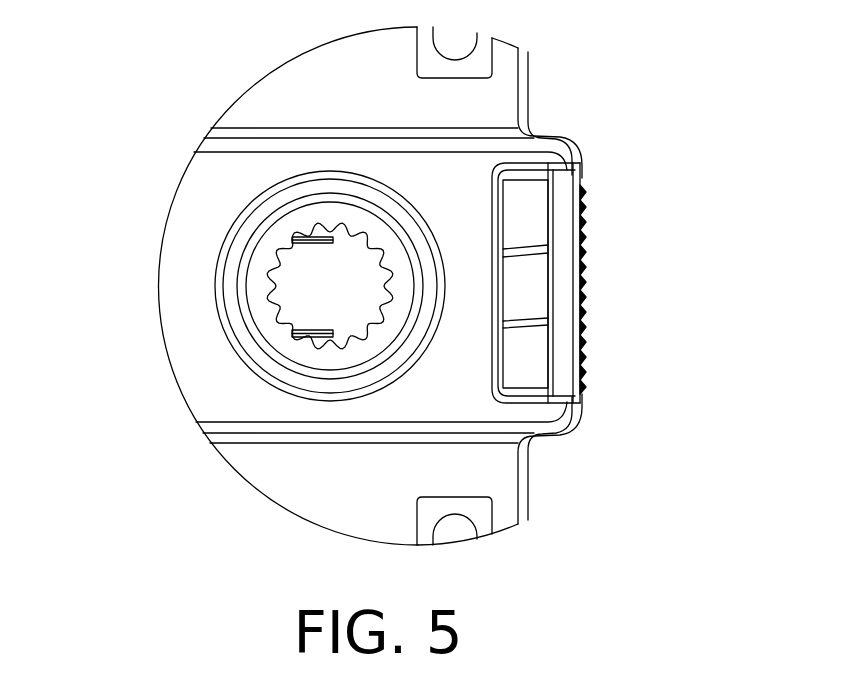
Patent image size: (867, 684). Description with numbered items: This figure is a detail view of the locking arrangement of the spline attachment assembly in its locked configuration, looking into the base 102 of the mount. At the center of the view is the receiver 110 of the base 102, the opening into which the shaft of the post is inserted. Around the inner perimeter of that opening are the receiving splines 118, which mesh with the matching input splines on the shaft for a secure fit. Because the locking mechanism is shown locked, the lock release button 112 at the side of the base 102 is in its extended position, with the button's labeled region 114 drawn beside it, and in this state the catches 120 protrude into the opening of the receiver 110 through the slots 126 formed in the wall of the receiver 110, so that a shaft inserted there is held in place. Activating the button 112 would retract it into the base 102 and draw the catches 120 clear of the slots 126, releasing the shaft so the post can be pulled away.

The base component 102 is at (510, 53).
The receiver 110 is at (242, 282).
The lock release button 112 is at (587, 248).
The bracket opening 114 is at (515, 358).
The receiving splines 118 is at (275, 265).
The catch 120 is at (312, 236).
The slot 126 is at (316, 212).